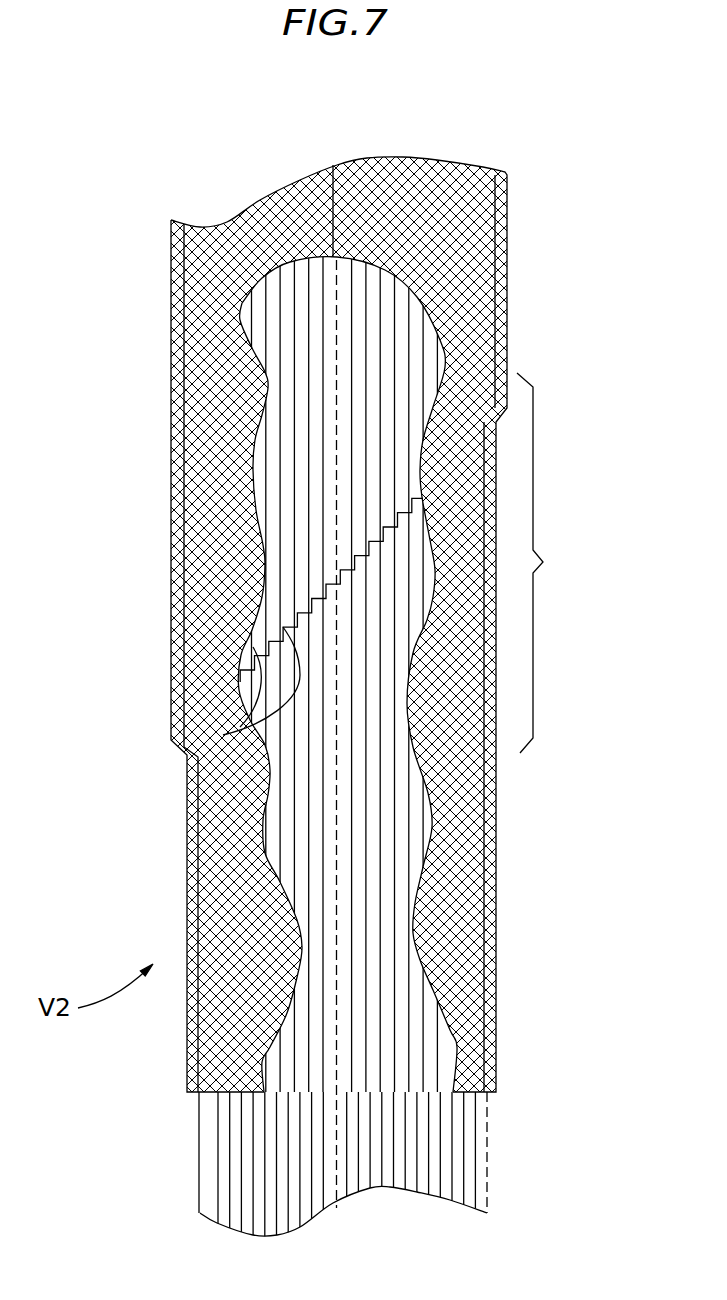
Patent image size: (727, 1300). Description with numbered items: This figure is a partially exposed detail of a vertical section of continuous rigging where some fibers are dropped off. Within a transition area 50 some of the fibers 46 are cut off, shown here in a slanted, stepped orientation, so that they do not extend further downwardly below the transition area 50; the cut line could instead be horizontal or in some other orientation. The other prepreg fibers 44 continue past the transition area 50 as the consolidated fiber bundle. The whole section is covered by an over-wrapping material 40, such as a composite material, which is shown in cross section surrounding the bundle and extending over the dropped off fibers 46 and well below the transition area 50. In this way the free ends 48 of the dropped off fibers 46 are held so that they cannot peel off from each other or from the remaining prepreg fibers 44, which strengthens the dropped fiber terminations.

The over-wrapping material 40 is at (490, 932).
The prepreg fibers 44 is at (393, 850).
The dropped off fibers 46 is at (278, 492).
The free ends of dropped off fibers 48 is at (223, 735).
The transition area 50 is at (543, 562).